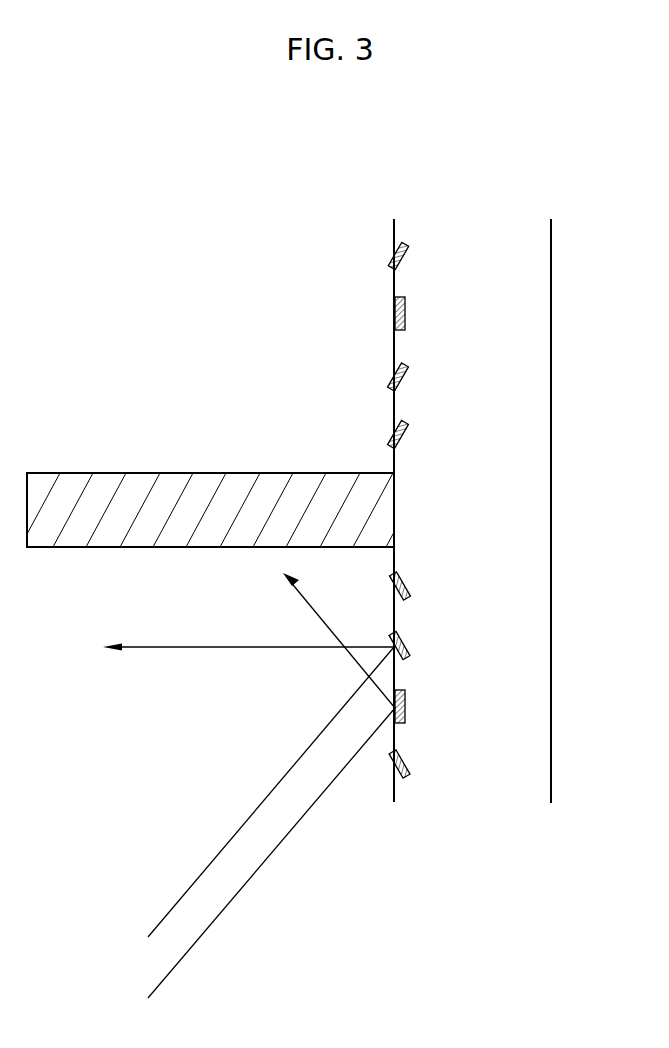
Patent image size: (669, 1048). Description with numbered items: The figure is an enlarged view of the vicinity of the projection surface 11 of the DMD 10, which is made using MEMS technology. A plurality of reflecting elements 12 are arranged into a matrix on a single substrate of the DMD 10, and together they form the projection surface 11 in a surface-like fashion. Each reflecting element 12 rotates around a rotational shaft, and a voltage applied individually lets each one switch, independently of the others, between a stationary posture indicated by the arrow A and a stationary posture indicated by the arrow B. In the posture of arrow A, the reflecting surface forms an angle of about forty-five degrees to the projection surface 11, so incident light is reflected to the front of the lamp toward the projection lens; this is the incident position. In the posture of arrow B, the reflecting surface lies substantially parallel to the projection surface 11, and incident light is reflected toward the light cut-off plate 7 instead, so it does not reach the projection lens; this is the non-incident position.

The light cut-off plate 7 is at (108, 478).
The DMD 10 is at (549, 271).
The projection surface 11 is at (394, 341).
The reflecting element 12 is at (408, 250).
The arrow A is at (428, 649).
The arrow B is at (428, 698).